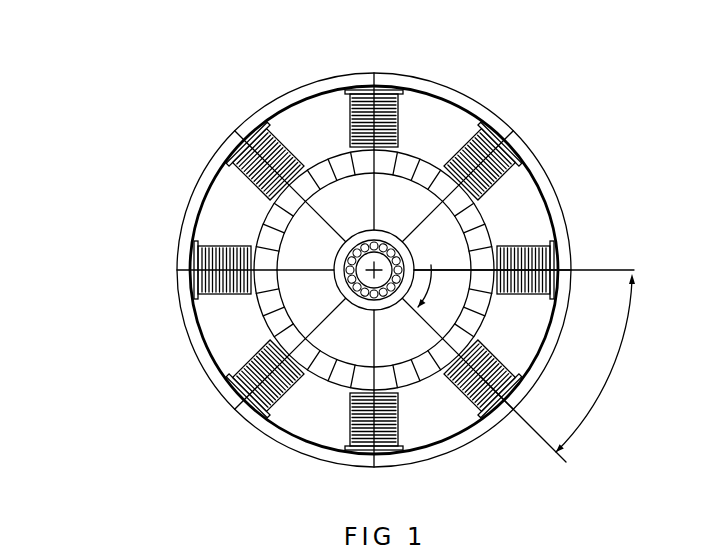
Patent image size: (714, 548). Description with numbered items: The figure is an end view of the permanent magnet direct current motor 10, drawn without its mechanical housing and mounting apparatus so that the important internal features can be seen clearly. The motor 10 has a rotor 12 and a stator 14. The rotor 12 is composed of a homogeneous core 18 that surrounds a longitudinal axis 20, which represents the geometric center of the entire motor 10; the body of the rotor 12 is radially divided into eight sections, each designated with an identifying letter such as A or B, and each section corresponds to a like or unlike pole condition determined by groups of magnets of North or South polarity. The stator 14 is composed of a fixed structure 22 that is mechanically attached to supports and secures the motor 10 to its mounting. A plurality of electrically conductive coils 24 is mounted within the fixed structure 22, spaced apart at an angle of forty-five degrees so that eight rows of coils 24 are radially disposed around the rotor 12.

The pm d.c. motor 10 is at (158, 192).
The rotor 12 is at (418, 197).
The stator 14 is at (310, 127).
The homogeneous core 18 is at (447, 257).
The longitudinal axis 20 is at (382, 261).
The fixed structure 22 is at (195, 352).
The electrically conductive coils 24 is at (352, 428).